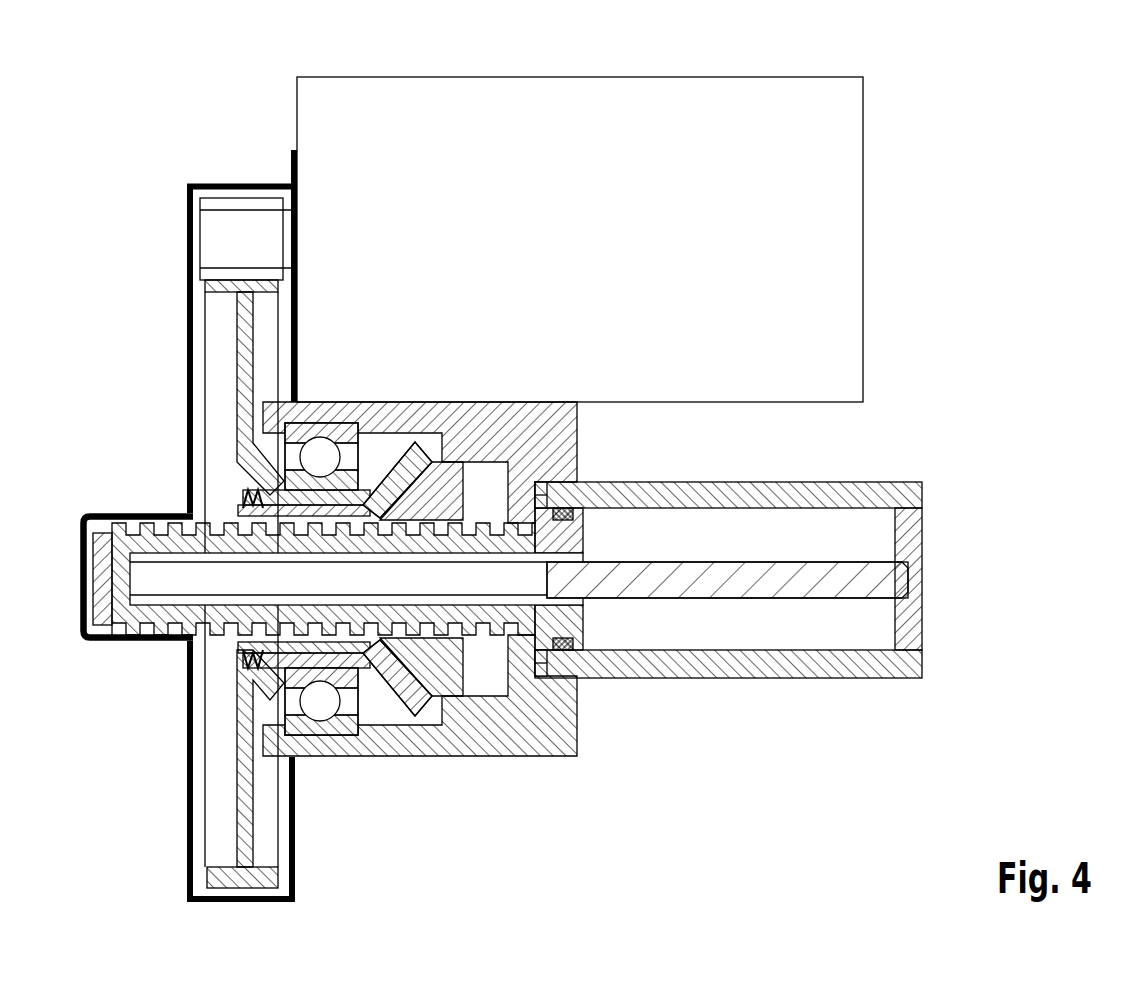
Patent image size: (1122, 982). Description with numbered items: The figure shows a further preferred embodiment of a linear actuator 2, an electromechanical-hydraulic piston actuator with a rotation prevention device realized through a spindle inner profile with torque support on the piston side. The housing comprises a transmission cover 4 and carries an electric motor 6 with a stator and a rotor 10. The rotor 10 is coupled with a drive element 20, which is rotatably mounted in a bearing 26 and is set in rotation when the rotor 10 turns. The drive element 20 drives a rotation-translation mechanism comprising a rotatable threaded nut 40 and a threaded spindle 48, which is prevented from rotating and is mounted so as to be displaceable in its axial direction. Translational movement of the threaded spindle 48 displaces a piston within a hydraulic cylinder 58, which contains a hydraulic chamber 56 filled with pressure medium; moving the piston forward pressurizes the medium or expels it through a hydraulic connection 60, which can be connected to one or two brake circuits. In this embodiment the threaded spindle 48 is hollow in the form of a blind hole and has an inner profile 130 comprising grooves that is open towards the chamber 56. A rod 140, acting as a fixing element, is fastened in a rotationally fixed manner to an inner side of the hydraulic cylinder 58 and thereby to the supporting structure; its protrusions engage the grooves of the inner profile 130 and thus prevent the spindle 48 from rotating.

The linear actuator 2 is at (917, 98).
The transmission cover 4 is at (187, 333).
The electric motor 6 is at (462, 148).
The rotor 10 is at (243, 223).
The drive element 20 is at (207, 877).
The bearing 26 is at (330, 708).
The threaded nut 40 is at (455, 690).
The threaded spindle 48 is at (115, 604).
The hydraulic chamber 56 is at (773, 612).
The hydraulic cylinder 58 is at (683, 660).
The hydraulic connection 60 is at (922, 532).
The inner profile 130 is at (162, 557).
The rod 140 is at (705, 580).